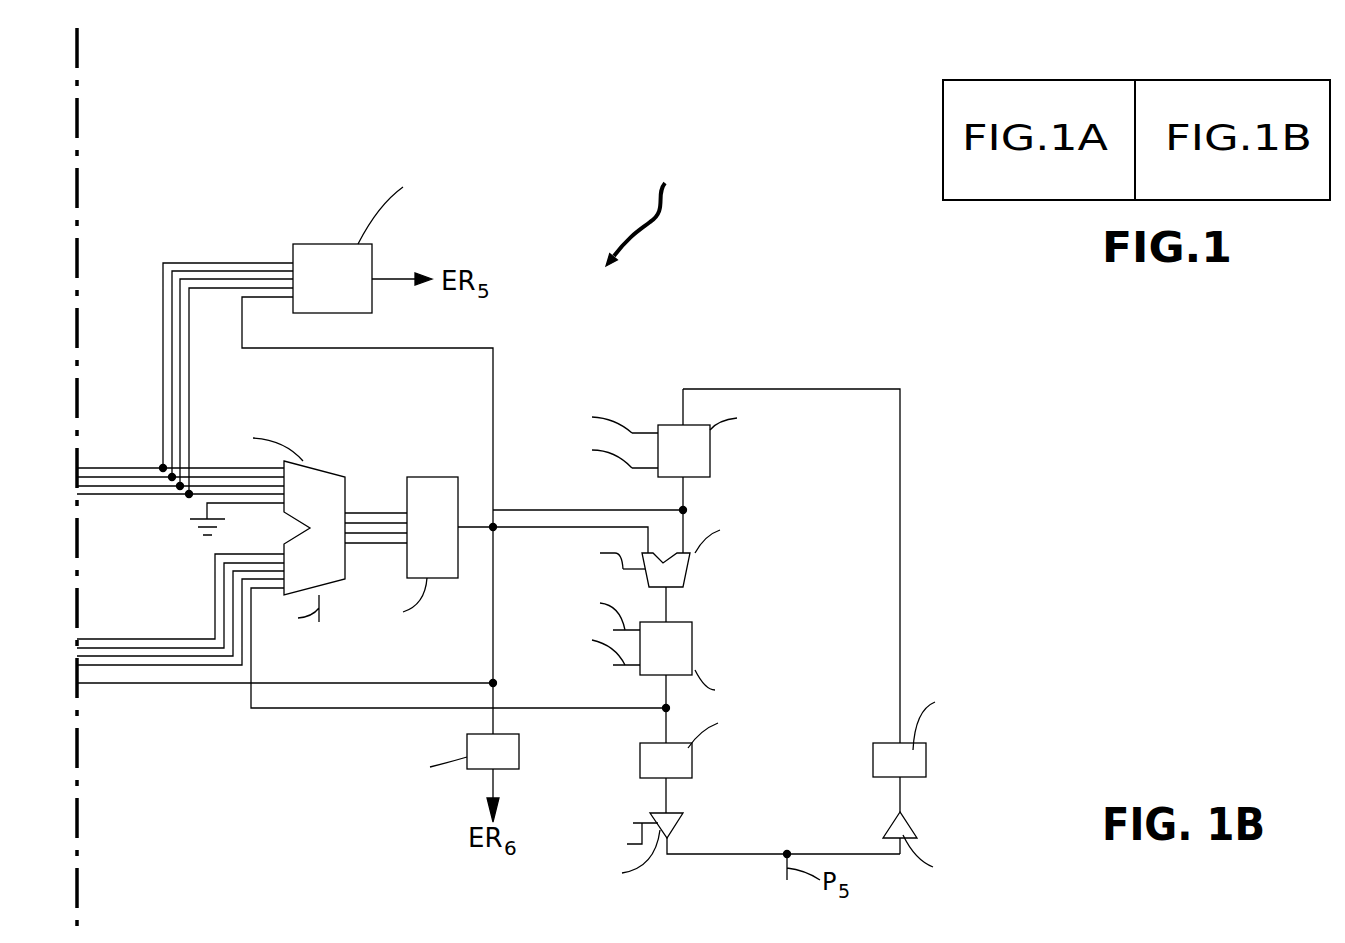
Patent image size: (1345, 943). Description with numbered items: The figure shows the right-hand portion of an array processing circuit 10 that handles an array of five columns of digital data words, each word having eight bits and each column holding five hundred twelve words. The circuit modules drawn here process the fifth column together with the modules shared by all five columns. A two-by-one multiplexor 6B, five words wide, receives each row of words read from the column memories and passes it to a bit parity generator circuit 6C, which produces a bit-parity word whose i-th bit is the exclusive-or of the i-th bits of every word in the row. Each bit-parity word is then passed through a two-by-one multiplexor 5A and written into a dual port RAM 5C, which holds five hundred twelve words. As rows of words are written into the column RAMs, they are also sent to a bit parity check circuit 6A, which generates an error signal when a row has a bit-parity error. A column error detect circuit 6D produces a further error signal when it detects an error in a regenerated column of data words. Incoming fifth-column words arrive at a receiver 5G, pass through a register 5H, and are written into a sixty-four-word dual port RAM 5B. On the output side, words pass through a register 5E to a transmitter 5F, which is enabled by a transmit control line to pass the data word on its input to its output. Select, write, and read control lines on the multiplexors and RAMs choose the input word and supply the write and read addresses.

The array processing circuit 10 is at (645, 209).
The bit parity check circuit 6A is at (333, 244).
The 2 × 1 multiplexor (5 words wide) 6B is at (318, 468).
The bit parity generator circuit 6C is at (422, 477).
The column error detect circuit 6D is at (519, 750).
The 2 × 1 multiplexor 5A is at (685, 570).
The dual port RAM 5B is at (703, 438).
The dual port RAM 5C is at (693, 653).
The register 5E is at (692, 762).
The transmitter 5F is at (677, 825).
The receiver 5G is at (908, 827).
The register 5H is at (926, 758).